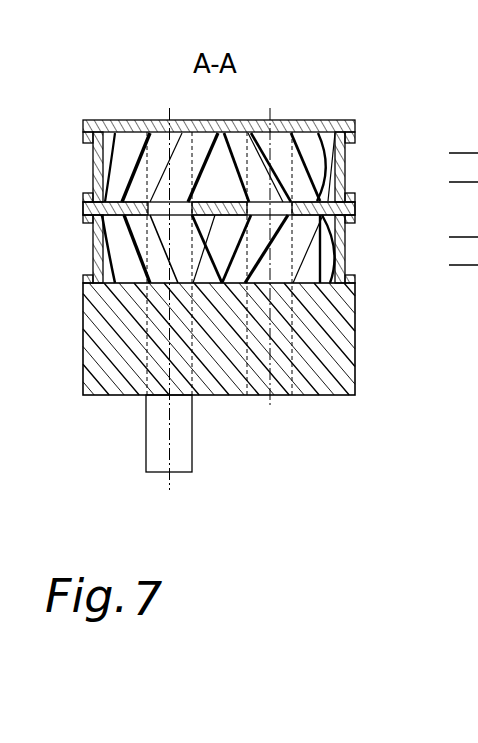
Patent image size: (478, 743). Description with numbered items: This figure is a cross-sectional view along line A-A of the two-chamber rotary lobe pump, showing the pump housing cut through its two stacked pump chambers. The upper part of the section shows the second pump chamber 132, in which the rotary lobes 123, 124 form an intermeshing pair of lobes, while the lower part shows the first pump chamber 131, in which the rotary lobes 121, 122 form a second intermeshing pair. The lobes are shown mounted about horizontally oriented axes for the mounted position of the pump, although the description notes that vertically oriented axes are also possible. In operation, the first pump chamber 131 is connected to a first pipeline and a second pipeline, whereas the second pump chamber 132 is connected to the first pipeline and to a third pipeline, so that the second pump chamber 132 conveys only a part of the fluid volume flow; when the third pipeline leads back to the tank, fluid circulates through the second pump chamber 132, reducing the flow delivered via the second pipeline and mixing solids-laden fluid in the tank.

The rotary lobe 121 is at (128, 258).
The rotary lobe 122 is at (301, 265).
The rotary lobe 123 is at (128, 147).
The rotary lobe 124 is at (302, 148).
The first pump chamber 131 is at (350, 259).
The second pump chamber 132 is at (372, 147).